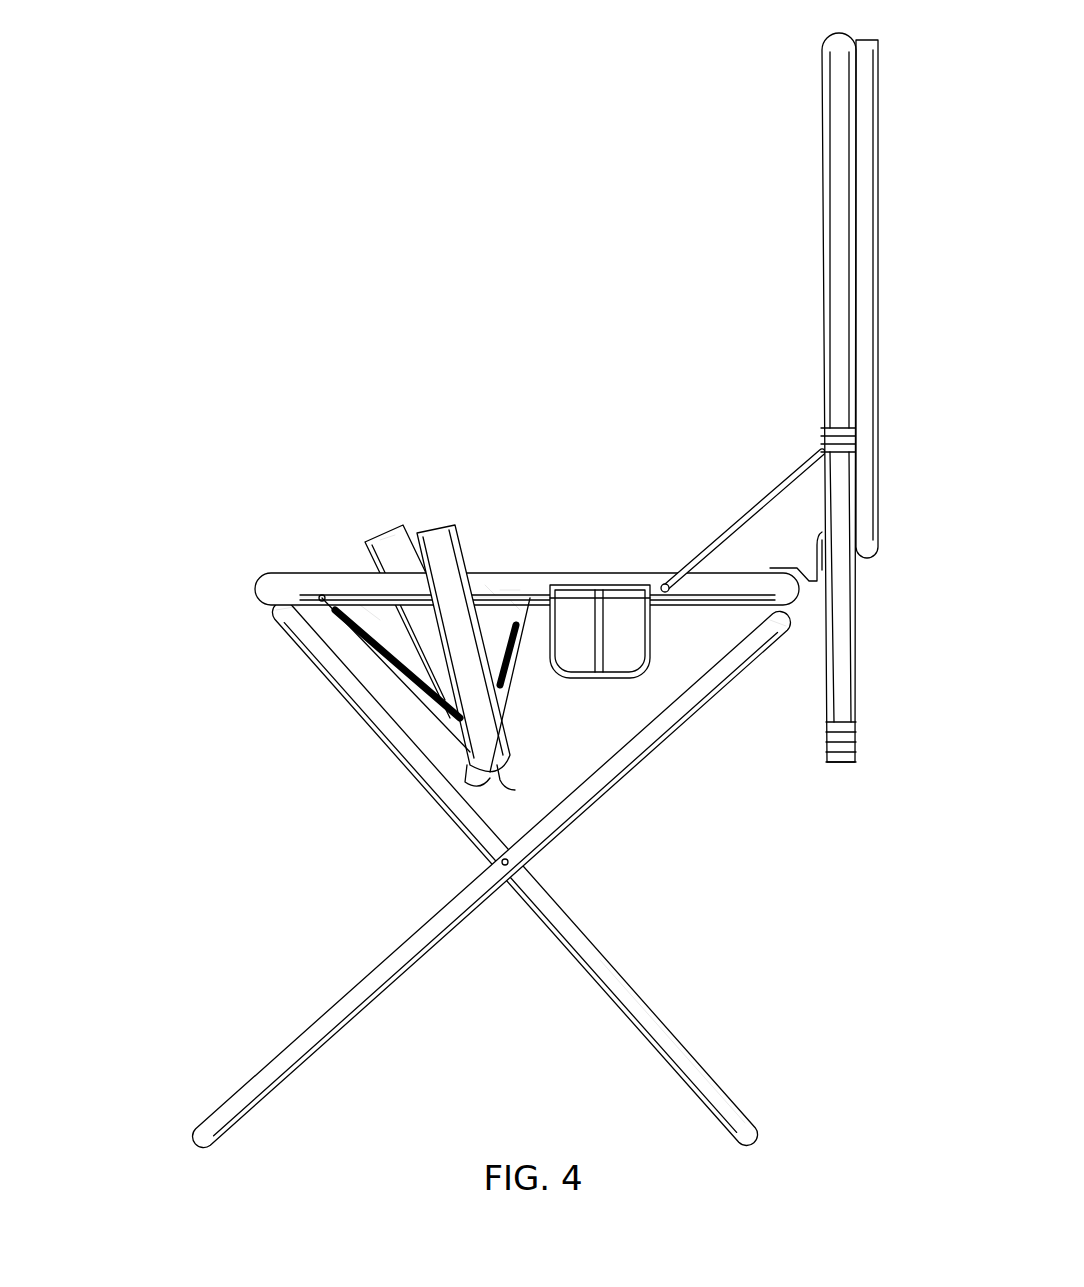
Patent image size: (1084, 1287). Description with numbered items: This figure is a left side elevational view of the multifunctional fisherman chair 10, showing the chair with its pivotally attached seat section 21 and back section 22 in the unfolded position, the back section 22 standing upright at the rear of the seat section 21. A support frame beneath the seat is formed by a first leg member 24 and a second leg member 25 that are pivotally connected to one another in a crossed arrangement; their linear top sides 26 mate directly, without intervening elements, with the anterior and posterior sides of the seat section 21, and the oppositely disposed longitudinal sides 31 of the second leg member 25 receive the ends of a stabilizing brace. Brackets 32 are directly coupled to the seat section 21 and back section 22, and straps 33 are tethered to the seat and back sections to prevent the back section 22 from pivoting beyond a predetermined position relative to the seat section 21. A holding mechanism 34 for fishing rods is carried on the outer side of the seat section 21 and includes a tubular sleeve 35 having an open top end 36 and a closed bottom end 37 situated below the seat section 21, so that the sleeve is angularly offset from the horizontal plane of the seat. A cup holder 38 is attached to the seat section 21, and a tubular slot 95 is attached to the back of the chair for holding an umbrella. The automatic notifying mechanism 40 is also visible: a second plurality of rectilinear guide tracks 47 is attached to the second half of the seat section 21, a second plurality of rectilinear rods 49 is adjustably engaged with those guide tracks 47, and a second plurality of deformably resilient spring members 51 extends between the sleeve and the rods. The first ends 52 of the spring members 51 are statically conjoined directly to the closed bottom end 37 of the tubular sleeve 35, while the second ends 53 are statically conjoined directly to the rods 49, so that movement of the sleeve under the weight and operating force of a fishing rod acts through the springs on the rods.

The multifunctional fisherman chair 10 is at (205, 272).
The seat section 21 is at (272, 575).
The back section 22 is at (838, 68).
The first leg member 24 is at (668, 1020).
The second leg member 25 is at (337, 1025).
The linear top sides 26 is at (283, 612).
The longitudinal sides 31 is at (608, 948).
The brackets 32 is at (809, 582).
The straps 33 is at (755, 522).
The holding mechanism 34 is at (415, 506).
The tubular sleeves 35 is at (385, 530).
The open top end 36 is at (385, 535).
The closed bottom end 37 is at (462, 790).
The cup holders 38 is at (625, 590).
The automatic notifying mechanism 40 is at (368, 617).
The second plurality of rectilinear guide tracks 47 is at (490, 585).
The second plurality of rectilinear rods 49 is at (257, 588).
The second plurality of spring members 51 is at (398, 680).
The first ends 52 is at (467, 745).
The second ends 53 is at (370, 612).
The tubular slot 95 is at (865, 160).